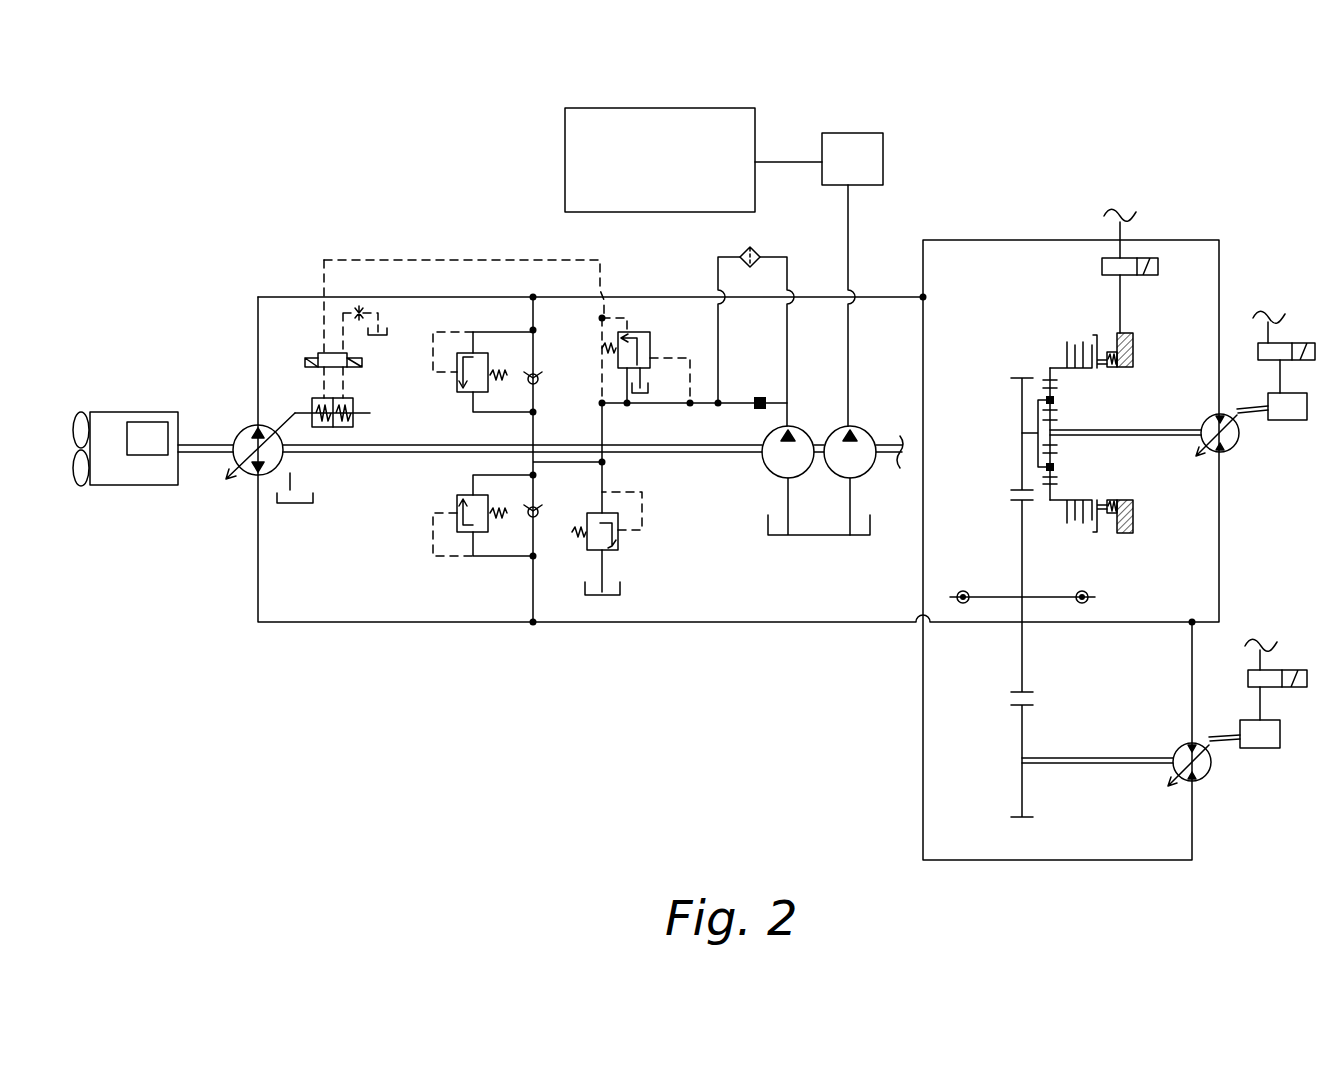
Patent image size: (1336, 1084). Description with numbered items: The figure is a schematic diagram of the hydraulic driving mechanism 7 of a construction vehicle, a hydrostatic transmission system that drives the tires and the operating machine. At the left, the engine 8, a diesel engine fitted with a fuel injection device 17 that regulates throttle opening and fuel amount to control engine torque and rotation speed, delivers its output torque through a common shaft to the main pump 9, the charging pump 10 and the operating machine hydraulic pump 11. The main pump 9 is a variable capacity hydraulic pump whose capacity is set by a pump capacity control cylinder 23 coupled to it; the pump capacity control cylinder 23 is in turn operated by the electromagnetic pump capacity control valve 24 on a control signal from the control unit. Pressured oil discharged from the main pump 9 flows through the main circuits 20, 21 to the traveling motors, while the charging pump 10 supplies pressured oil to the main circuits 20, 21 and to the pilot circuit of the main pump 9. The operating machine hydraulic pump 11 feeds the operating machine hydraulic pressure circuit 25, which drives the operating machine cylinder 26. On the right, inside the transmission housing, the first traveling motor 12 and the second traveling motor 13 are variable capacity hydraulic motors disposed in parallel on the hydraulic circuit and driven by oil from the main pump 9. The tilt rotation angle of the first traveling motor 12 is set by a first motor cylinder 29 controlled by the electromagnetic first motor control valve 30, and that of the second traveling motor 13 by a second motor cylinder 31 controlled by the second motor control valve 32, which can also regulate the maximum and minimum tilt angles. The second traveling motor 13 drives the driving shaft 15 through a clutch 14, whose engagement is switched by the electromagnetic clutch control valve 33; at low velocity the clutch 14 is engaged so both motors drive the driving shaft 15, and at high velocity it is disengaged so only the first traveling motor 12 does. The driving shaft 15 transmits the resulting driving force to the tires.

The hydraulic driving mechanism 7 is at (452, 200).
The engine 8 is at (115, 422).
The main pump 9 is at (282, 457).
The charging pump 10 is at (765, 472).
The operating machine hydraulic pump 11 is at (867, 465).
The first traveling motor 12 is at (1183, 746).
The second traveling motor 13 is at (1211, 420).
The clutch 14 is at (1085, 335).
The driving shaft 15 is at (1045, 600).
The fuel injection device 17 is at (155, 432).
The main circuit 20 is at (677, 622).
The main circuit 21 is at (662, 296).
The pump capacity control cylinder 23 is at (353, 425).
The pump capacity control valve 24 is at (323, 352).
The operating machine hydraulic pressure circuit 25 is at (883, 160).
The operating machine cylinder 26 is at (565, 158).
The first motor cylinder 29 is at (1263, 750).
The first motor control valve 30 is at (1250, 678).
The second motor cylinder 31 is at (1290, 420).
The second motor control valve 32 is at (1257, 352).
The clutch control valve 33 is at (1102, 262).